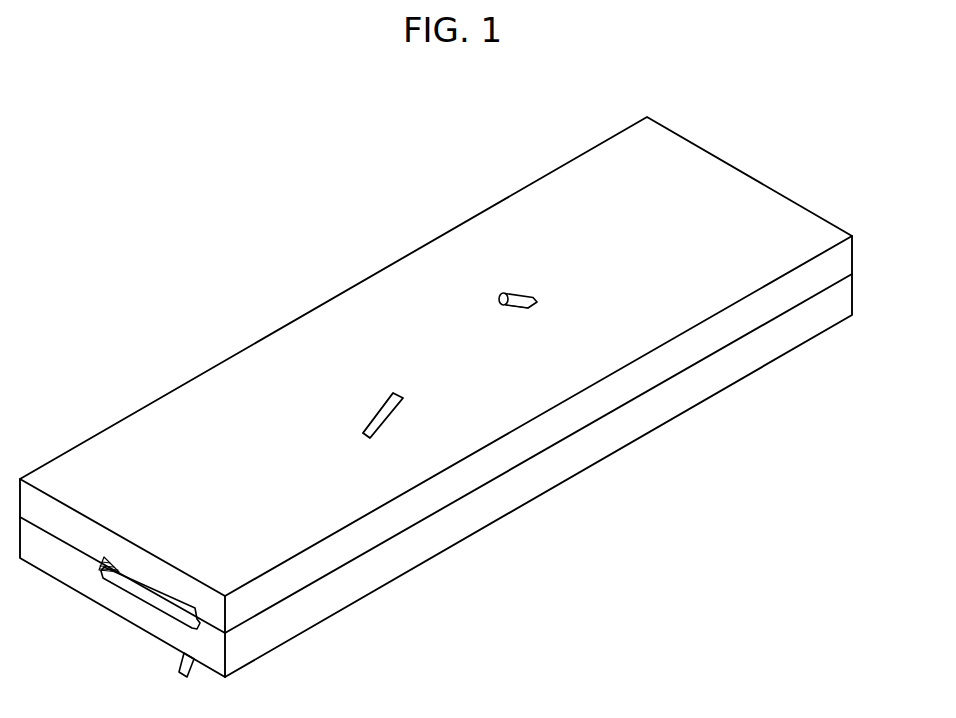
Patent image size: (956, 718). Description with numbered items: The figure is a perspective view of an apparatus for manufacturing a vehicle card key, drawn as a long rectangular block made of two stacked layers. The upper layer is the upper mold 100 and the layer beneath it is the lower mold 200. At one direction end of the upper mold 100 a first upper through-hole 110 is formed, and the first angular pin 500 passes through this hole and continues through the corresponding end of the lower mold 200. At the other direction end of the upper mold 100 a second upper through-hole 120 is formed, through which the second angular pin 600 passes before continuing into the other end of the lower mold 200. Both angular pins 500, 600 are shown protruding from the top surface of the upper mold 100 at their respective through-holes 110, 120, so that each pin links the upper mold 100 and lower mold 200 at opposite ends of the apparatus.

The upper mold 100 is at (208, 370).
The lower mold 200 is at (435, 557).
The first upper through-hole 110 is at (362, 430).
The second upper through-hole 120 is at (537, 300).
The first angular pin 500 is at (383, 413).
The second angular pin 600 is at (512, 288).